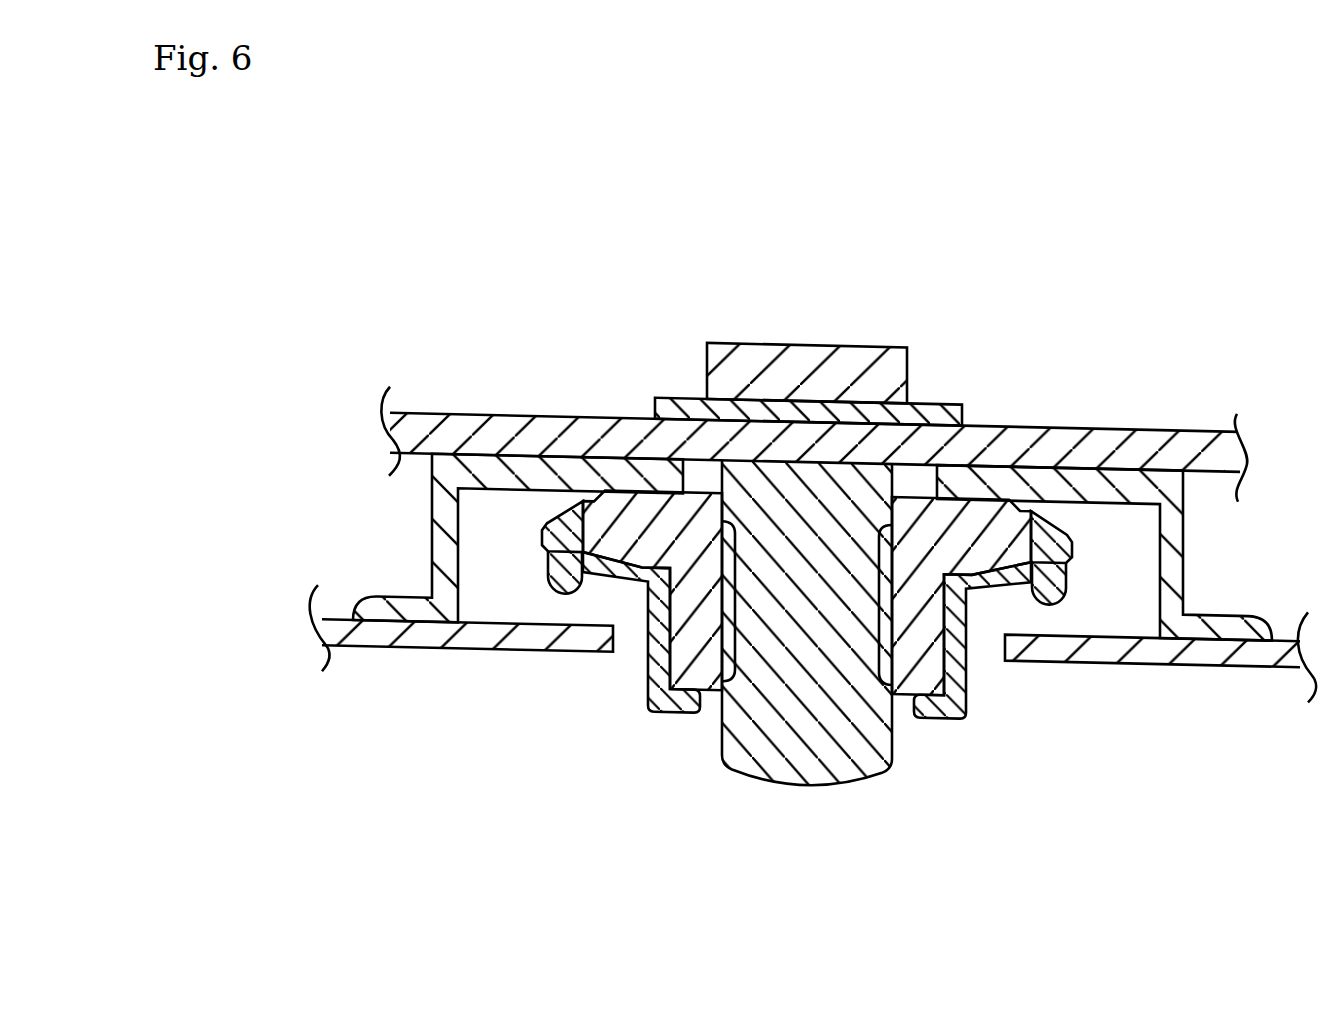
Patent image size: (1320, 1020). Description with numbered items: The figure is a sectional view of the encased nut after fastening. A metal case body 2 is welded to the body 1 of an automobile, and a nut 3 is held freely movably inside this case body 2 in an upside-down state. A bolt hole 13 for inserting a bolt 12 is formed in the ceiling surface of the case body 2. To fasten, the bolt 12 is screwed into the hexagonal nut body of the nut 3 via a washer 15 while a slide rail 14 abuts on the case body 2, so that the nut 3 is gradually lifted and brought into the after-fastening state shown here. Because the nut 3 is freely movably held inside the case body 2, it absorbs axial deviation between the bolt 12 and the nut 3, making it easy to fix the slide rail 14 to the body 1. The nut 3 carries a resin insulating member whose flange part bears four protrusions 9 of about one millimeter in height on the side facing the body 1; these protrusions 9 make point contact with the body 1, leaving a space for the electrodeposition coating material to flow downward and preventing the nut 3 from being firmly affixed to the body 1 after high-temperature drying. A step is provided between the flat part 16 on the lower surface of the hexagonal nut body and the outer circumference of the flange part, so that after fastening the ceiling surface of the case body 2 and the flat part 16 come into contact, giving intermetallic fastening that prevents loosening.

The body 1 is at (1273, 646).
The case body 2 is at (445, 551).
The nut 3 is at (983, 717).
The protrusions 9 is at (563, 579).
The bolt 12 is at (815, 348).
The bolt hole 13 is at (710, 470).
The slide rail 14 is at (1187, 429).
The washer 15 is at (955, 391).
The flat part 16 is at (653, 482).